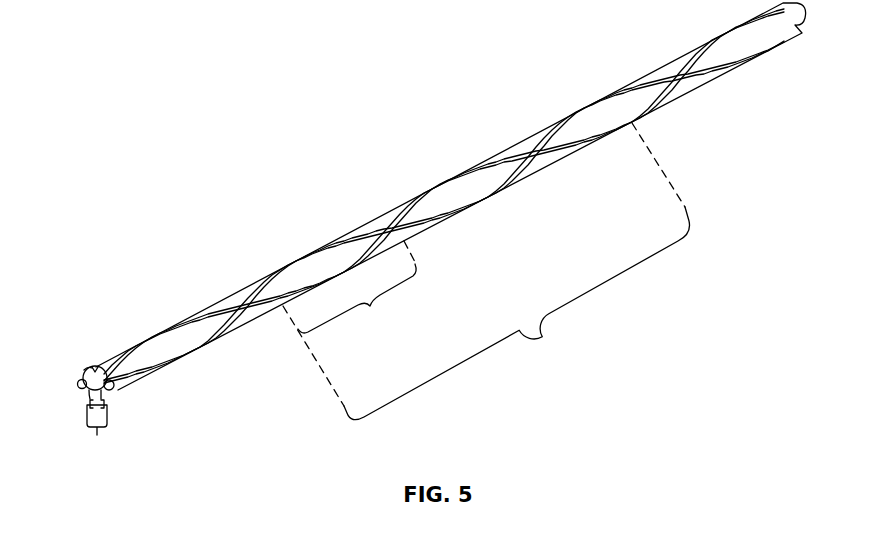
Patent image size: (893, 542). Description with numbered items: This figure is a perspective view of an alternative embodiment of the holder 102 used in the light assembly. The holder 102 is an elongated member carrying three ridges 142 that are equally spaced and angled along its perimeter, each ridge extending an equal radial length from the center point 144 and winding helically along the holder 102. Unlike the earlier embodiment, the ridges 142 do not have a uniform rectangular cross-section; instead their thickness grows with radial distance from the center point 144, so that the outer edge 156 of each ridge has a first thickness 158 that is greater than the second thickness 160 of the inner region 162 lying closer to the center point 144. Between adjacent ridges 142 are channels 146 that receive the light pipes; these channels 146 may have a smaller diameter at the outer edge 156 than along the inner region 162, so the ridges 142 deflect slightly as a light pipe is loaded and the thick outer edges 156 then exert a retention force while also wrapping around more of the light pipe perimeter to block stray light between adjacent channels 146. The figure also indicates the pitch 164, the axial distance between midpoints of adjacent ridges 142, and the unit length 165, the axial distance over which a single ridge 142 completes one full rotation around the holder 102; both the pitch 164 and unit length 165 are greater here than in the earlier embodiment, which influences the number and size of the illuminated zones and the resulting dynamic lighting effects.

The holder 102 is at (332, 151).
The ridges 142 is at (80, 373).
The center point 144 is at (95, 366).
The channels 146 is at (122, 390).
The outer edge 156 is at (103, 400).
The first thickness 158 is at (97, 433).
The second thickness 160 is at (91, 404).
The inner region 162 is at (77, 389).
The pitch 164 is at (370, 306).
The unit length 165 is at (542, 337).